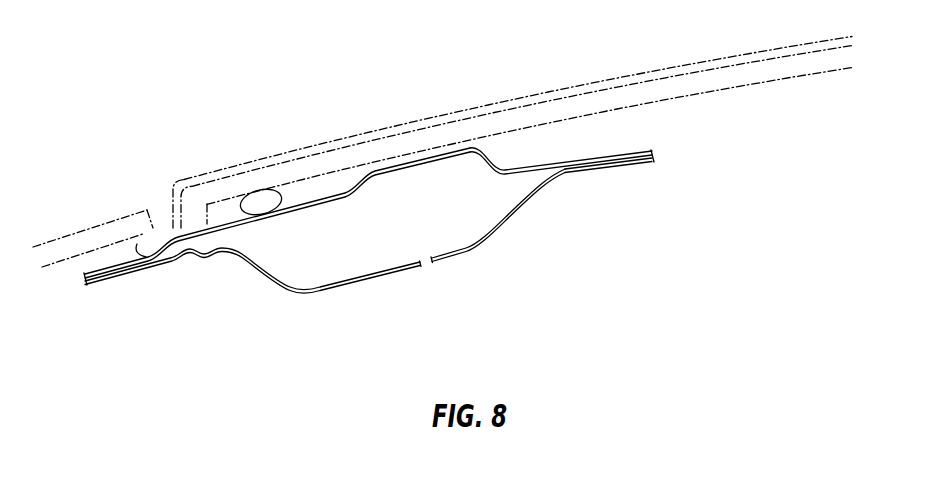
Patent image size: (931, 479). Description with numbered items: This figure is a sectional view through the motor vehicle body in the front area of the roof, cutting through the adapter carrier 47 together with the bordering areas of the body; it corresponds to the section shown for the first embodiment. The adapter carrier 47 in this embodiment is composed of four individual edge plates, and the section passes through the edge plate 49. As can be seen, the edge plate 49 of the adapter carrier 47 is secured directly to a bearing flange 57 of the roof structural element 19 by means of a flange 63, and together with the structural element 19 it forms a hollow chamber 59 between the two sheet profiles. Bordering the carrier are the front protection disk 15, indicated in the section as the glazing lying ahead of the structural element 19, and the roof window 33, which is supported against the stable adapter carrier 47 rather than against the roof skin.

The front protection disk 15 is at (123, 212).
The roof window 33 is at (290, 150).
The adapter carrier 47 is at (498, 146).
The edge plate 49 is at (435, 157).
The flange 63 is at (635, 148).
The bearing flange 57 is at (618, 168).
The roof structural element 19 is at (462, 253).
The hollow chamber 59 is at (347, 272).